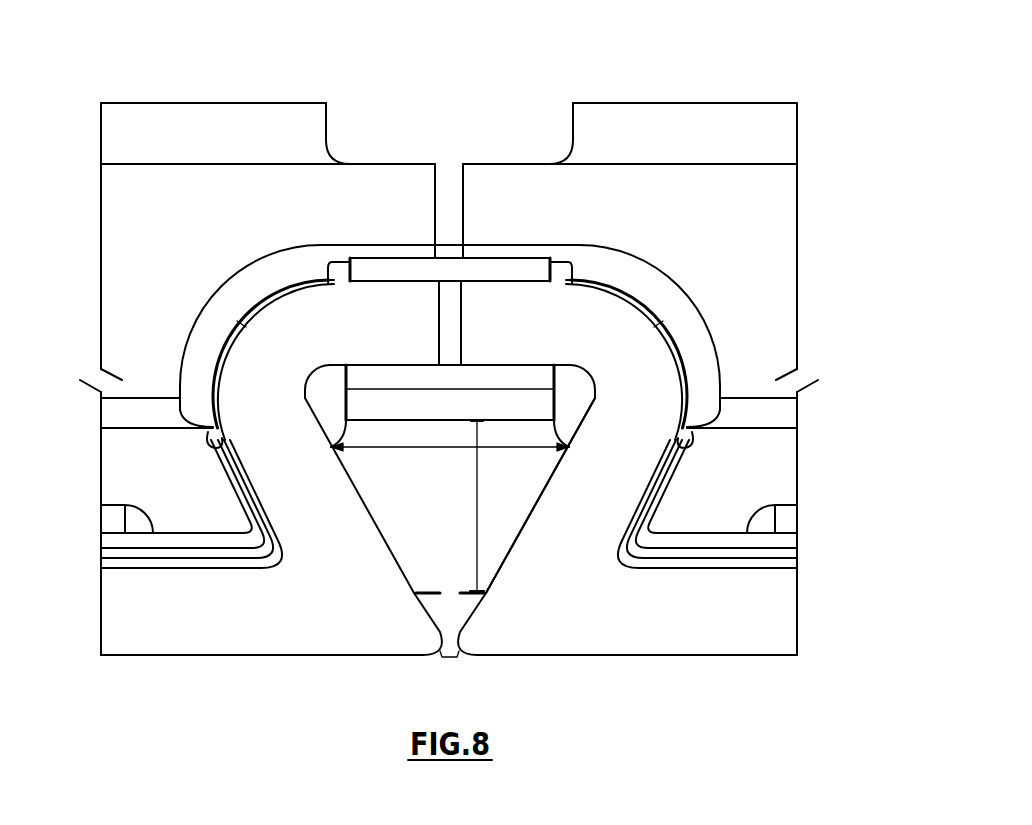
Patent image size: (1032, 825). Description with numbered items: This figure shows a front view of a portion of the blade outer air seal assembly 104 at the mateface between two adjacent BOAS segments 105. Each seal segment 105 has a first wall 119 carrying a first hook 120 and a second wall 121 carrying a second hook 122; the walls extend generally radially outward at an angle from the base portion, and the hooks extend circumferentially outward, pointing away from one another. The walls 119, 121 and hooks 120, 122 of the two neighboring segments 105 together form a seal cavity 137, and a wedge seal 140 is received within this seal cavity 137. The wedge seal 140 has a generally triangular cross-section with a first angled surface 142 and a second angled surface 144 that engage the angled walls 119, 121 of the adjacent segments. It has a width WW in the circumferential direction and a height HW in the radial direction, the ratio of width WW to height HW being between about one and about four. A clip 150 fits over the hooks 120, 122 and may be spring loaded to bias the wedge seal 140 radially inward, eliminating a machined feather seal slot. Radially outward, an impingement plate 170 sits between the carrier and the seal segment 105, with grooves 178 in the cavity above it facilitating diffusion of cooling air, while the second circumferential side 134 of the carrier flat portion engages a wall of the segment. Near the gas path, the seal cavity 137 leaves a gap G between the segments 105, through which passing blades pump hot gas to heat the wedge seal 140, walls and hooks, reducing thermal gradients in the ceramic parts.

The BOAS assembly 104 is at (851, 70).
The BOAS segment 105 is at (235, 633).
The first wall 119 is at (622, 475).
The first hook 120 is at (520, 305).
The second wall 121 is at (308, 497).
The second hook 122 is at (373, 305).
The second circumferential side 134 is at (203, 513).
The seal cavity 137 is at (573, 412).
The wedge seal 140 is at (353, 437).
The first angled surface 142 is at (380, 530).
The second angled surface 144 is at (543, 495).
The clip 150 is at (448, 272).
The impingement plate 170 is at (113, 543).
The groove 178 is at (232, 467).
The width of the wedge seal WW is at (411, 447).
The height of the wedge seal HW is at (475, 530).
The gap G is at (449, 657).